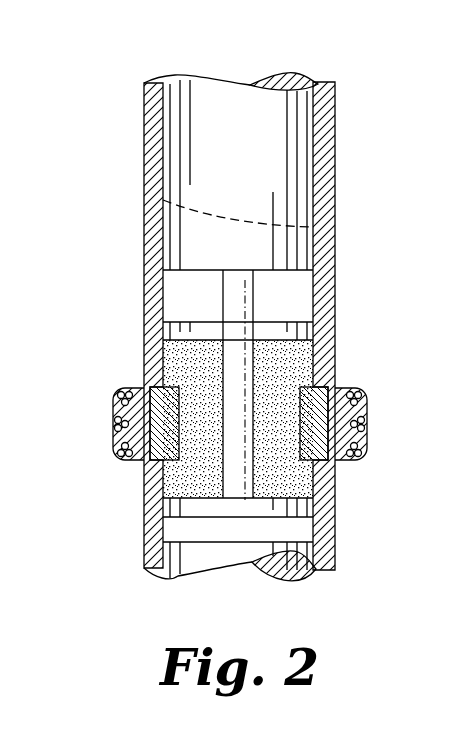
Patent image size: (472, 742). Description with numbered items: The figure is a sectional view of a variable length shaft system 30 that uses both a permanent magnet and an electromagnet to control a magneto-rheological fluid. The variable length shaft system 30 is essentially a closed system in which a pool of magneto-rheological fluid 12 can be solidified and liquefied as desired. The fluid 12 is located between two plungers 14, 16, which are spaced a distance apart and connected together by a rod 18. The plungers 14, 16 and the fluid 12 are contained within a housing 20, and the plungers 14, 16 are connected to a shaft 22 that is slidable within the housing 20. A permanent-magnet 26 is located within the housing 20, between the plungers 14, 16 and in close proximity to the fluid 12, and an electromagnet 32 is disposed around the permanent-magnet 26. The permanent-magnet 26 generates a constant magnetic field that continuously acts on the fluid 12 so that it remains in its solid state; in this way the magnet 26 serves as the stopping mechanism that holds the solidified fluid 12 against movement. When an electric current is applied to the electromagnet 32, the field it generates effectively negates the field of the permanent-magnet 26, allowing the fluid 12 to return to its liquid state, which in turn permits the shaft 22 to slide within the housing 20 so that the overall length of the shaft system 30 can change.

The magneto-rheological fluid 12 is at (288, 470).
The plunger 14 is at (168, 329).
The plunger 16 is at (184, 505).
The rod 18 is at (238, 357).
The housing 20 is at (325, 550).
The shaft 22 is at (275, 148).
The permanent-magnet 26 is at (155, 176).
The variable length shaft system 30 is at (286, 319).
The electromagnet 32 is at (367, 422).